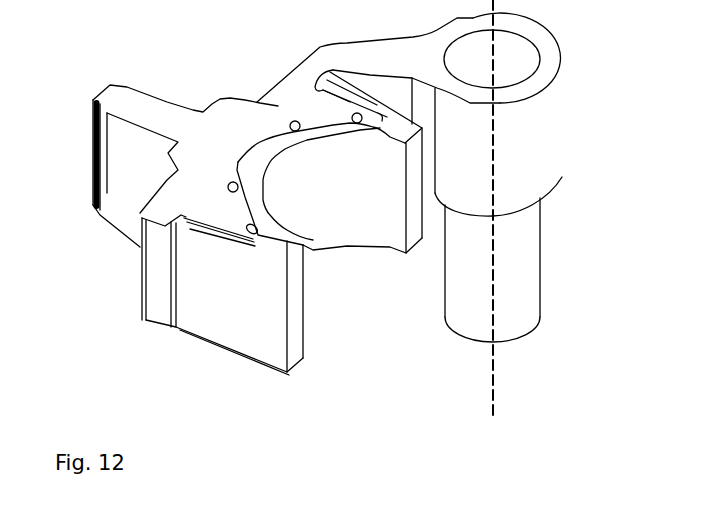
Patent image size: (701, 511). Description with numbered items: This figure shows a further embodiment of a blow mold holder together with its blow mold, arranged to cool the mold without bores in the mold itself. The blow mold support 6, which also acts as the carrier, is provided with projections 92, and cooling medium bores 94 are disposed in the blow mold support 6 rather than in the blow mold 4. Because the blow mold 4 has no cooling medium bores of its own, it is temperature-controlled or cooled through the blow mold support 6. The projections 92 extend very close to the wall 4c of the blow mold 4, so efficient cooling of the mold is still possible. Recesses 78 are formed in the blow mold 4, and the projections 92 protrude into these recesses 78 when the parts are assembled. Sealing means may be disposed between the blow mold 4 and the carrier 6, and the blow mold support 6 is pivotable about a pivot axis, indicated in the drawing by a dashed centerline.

The blow mold 4 is at (237, 297).
The wall of the blow mold 4c is at (305, 198).
The blow mold support 6 is at (278, 105).
The recesses 78 is at (255, 236).
The projections 92 is at (337, 117).
The cooling medium bores 94 is at (250, 228).